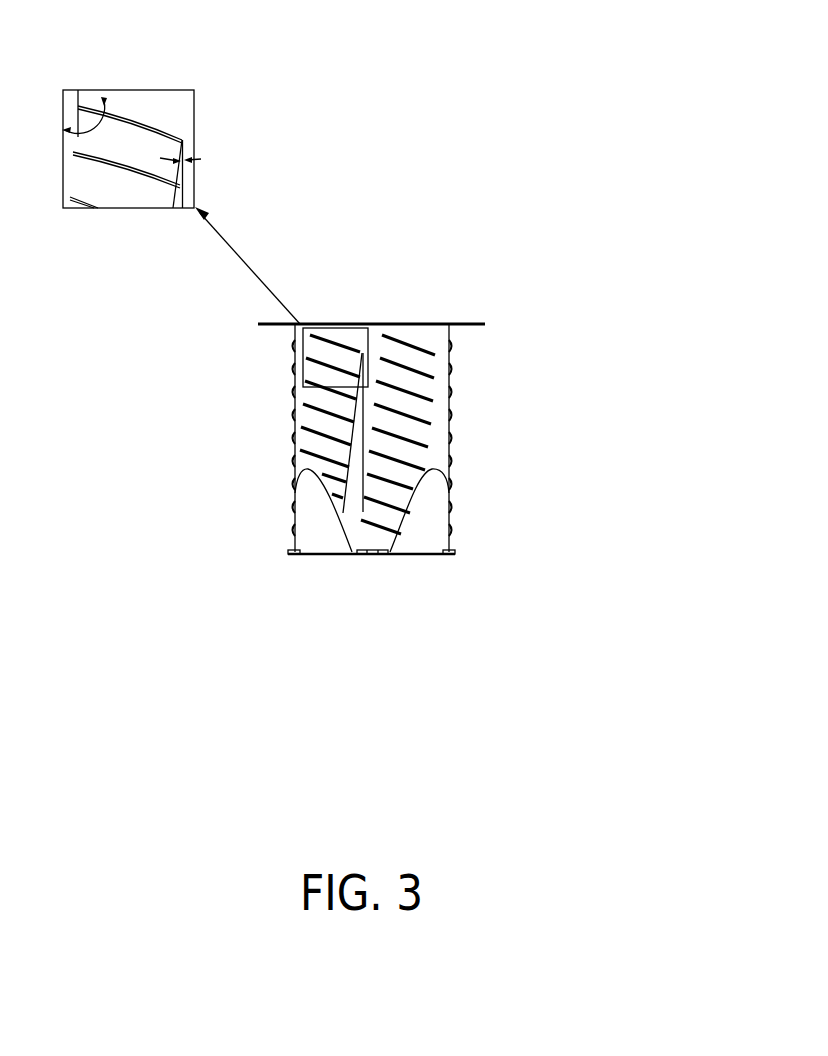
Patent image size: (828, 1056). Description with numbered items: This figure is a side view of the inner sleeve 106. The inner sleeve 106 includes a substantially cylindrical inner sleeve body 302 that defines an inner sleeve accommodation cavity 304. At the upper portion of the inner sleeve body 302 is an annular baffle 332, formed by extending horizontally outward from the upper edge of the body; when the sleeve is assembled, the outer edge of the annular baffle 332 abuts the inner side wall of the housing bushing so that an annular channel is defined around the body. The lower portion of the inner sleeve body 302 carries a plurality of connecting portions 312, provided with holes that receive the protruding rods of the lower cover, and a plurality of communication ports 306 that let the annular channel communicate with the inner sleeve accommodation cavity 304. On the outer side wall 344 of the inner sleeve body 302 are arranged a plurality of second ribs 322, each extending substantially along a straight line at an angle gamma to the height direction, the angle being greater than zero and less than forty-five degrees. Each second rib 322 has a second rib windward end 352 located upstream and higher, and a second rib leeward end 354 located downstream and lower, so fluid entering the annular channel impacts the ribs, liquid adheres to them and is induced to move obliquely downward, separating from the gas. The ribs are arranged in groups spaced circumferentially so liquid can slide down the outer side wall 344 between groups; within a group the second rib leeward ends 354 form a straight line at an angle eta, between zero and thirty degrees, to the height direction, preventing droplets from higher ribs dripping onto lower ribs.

The inner sleeve 106 is at (610, 174).
The inner sleeve body 302 is at (448, 415).
The inner sleeve accommodation cavity 304 is at (432, 498).
The communication ports 306 is at (437, 538).
The connecting portions 312 is at (373, 555).
The second ribs 322 is at (155, 131).
The annular baffle 332 is at (483, 324).
The outer side wall 344 is at (447, 357).
The second rib windward end 352 is at (78, 90).
The second rib leeward end 354 is at (182, 140).